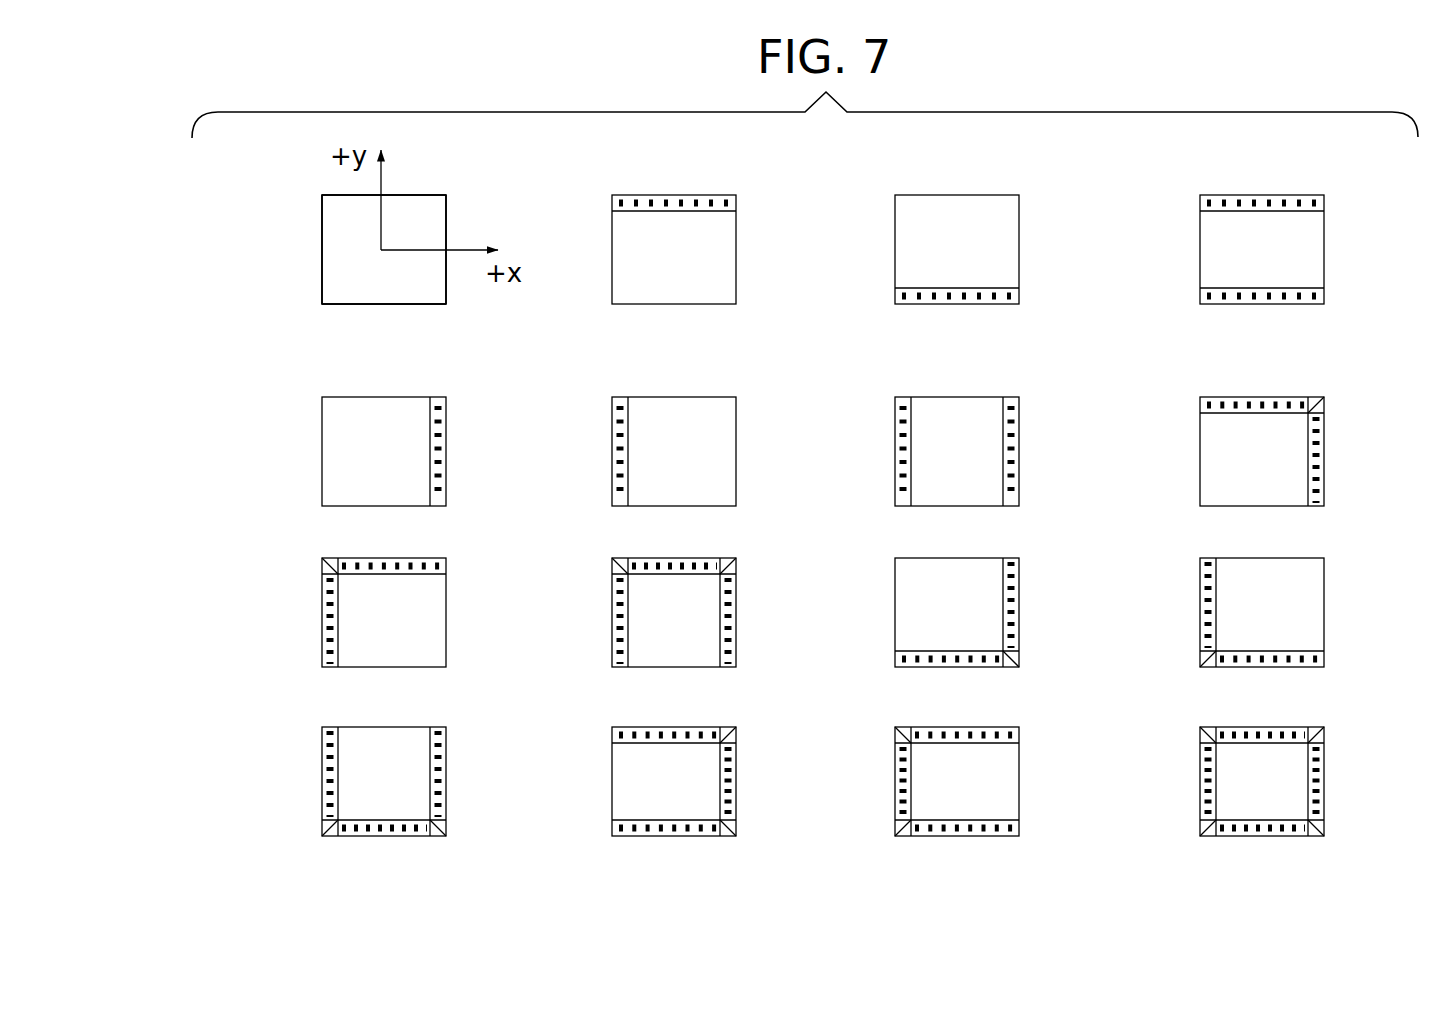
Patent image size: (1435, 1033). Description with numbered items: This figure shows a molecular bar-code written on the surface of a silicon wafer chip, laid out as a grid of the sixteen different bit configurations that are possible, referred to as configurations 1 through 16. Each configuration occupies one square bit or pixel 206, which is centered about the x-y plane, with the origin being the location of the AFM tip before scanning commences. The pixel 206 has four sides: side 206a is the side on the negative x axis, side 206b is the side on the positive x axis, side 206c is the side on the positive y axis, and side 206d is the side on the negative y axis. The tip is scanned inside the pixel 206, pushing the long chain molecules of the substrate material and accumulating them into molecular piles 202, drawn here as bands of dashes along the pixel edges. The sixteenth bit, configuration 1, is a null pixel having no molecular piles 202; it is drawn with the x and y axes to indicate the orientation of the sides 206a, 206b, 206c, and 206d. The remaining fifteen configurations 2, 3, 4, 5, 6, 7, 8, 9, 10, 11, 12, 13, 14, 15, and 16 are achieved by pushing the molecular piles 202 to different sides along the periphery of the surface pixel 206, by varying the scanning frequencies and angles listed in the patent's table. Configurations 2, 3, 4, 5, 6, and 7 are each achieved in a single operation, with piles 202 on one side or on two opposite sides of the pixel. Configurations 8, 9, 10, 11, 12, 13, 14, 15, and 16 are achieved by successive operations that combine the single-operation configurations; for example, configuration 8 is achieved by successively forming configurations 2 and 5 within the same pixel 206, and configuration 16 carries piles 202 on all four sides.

The null pixel bit configuration 1 is at (298, 232).
The bit configuration 2 is at (748, 208).
The bit configuration 3 is at (1040, 208).
The bit configuration 4 is at (1333, 273).
The bit configuration 5 is at (455, 466).
The bit configuration 6 is at (705, 386).
The bit configuration 7 is at (1027, 396).
The bit configuration 8 is at (1222, 391).
The bit configuration 9 is at (455, 631).
The bit configuration 10 is at (745, 631).
The bit configuration 11 is at (1027, 563).
The bit configuration 12 is at (1334, 573).
The bit configuration 13 is at (455, 811).
The bit configuration 14 is at (755, 816).
The bit configuration 15 is at (1040, 806).
The bit configuration 16 is at (1310, 849).
The molecular pile 202 is at (700, 196).
The pixel 206 is at (355, 235).
The side of the pixel 206a is at (322, 268).
The side of the pixel 206b is at (446, 218).
The side of the pixel 206c is at (413, 196).
The side of the pixel 206d is at (392, 304).